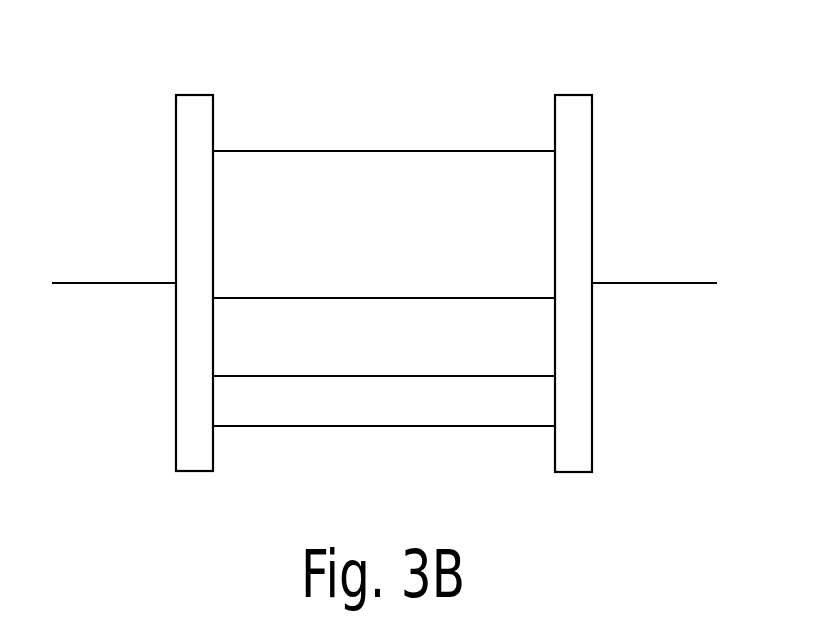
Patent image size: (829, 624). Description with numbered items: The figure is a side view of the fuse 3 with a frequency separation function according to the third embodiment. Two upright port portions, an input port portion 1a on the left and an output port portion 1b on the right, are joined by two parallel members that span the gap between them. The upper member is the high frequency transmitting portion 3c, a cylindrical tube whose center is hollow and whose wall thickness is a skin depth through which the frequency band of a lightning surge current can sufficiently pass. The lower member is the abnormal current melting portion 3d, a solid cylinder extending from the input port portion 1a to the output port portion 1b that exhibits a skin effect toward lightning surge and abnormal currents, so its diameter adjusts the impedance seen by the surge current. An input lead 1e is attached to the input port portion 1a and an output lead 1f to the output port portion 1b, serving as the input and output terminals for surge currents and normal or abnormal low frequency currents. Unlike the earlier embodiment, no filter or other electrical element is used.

The fuse with a frequency separation function 3 is at (480, 70).
The input port portion 1a is at (193, 93).
The output port portion 1b is at (570, 93).
The high frequency transmitting portion 3c is at (397, 149).
The abnormal current melting portion 3d is at (432, 374).
The input lead 1e is at (103, 281).
The output lead 1f is at (675, 281).